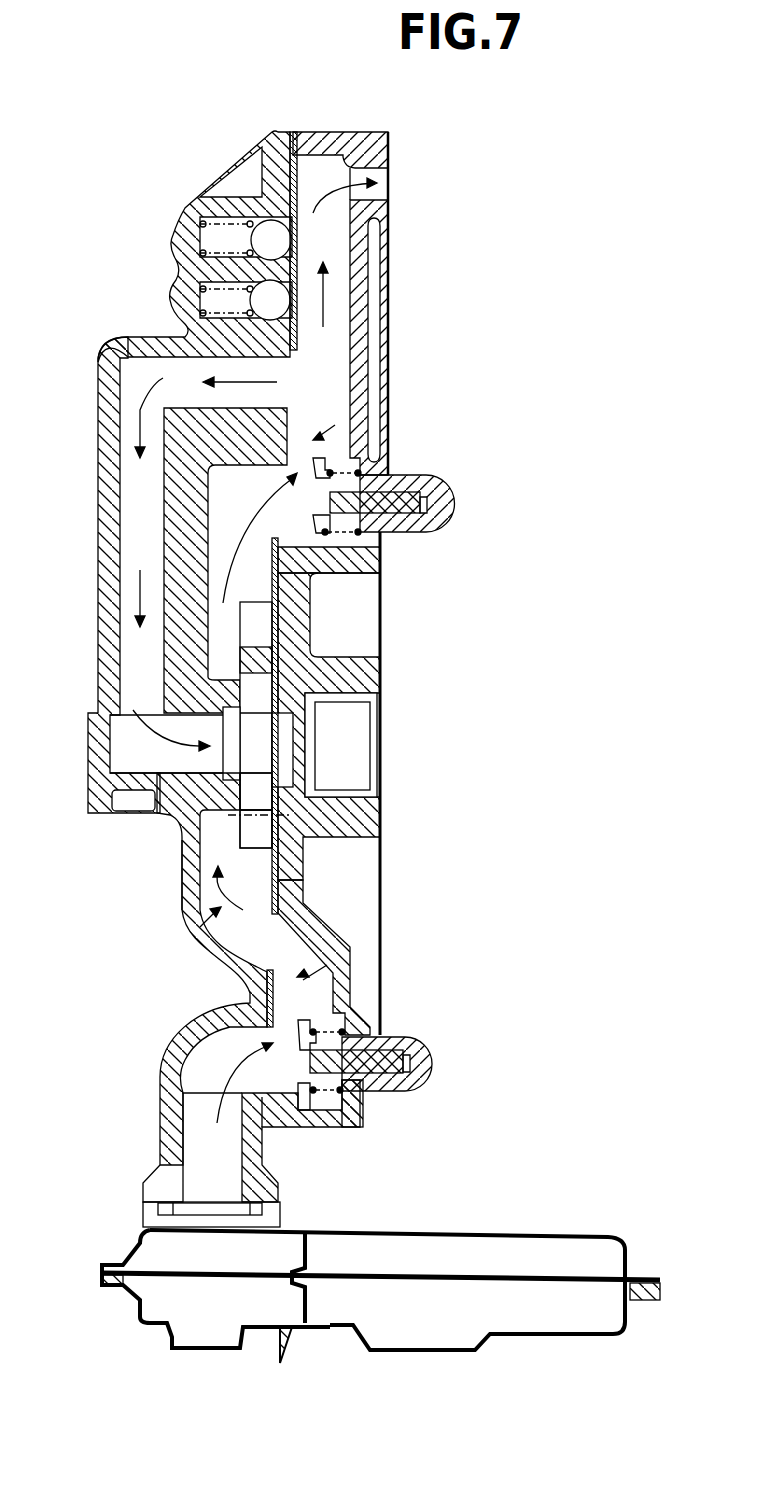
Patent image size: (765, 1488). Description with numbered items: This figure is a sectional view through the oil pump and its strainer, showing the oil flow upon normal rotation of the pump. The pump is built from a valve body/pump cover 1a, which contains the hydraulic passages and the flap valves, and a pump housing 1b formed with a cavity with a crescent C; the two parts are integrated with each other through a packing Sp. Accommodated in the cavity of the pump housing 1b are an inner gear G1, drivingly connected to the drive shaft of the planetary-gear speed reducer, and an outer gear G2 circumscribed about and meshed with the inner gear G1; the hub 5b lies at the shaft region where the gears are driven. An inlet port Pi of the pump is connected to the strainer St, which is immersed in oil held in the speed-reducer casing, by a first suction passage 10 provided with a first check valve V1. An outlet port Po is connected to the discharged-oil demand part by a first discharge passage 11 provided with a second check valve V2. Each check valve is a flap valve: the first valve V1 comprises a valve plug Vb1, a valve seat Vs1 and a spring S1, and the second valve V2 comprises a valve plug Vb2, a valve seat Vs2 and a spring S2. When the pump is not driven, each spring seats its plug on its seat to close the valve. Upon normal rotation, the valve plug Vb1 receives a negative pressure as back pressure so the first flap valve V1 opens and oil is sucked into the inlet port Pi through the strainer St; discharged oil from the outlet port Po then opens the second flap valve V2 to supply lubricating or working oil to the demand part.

The valve body/pump cover 1a is at (373, 145).
The pump housing 1b is at (280, 150).
The first discharge passage 11 is at (362, 398).
The valve plug Vb2 is at (387, 500).
The second check valve V2 is at (452, 533).
The spring S2 is at (330, 560).
The valve seat Vs2 is at (327, 573).
The outlet port Po is at (232, 652).
The crescent C is at (283, 660).
The hub 5b is at (347, 757).
The inner gear G1 is at (258, 797).
The outer gear G2 is at (258, 838).
The packing Sp is at (281, 897).
The inlet port Pi is at (200, 927).
The first suction passage 10 is at (333, 957).
The spring S1 is at (352, 1018).
The first check valve V1 is at (447, 1053).
The valve plug Vb1 is at (377, 1067).
The valve seat Vs1 is at (290, 1113).
The strainer St is at (587, 1234).